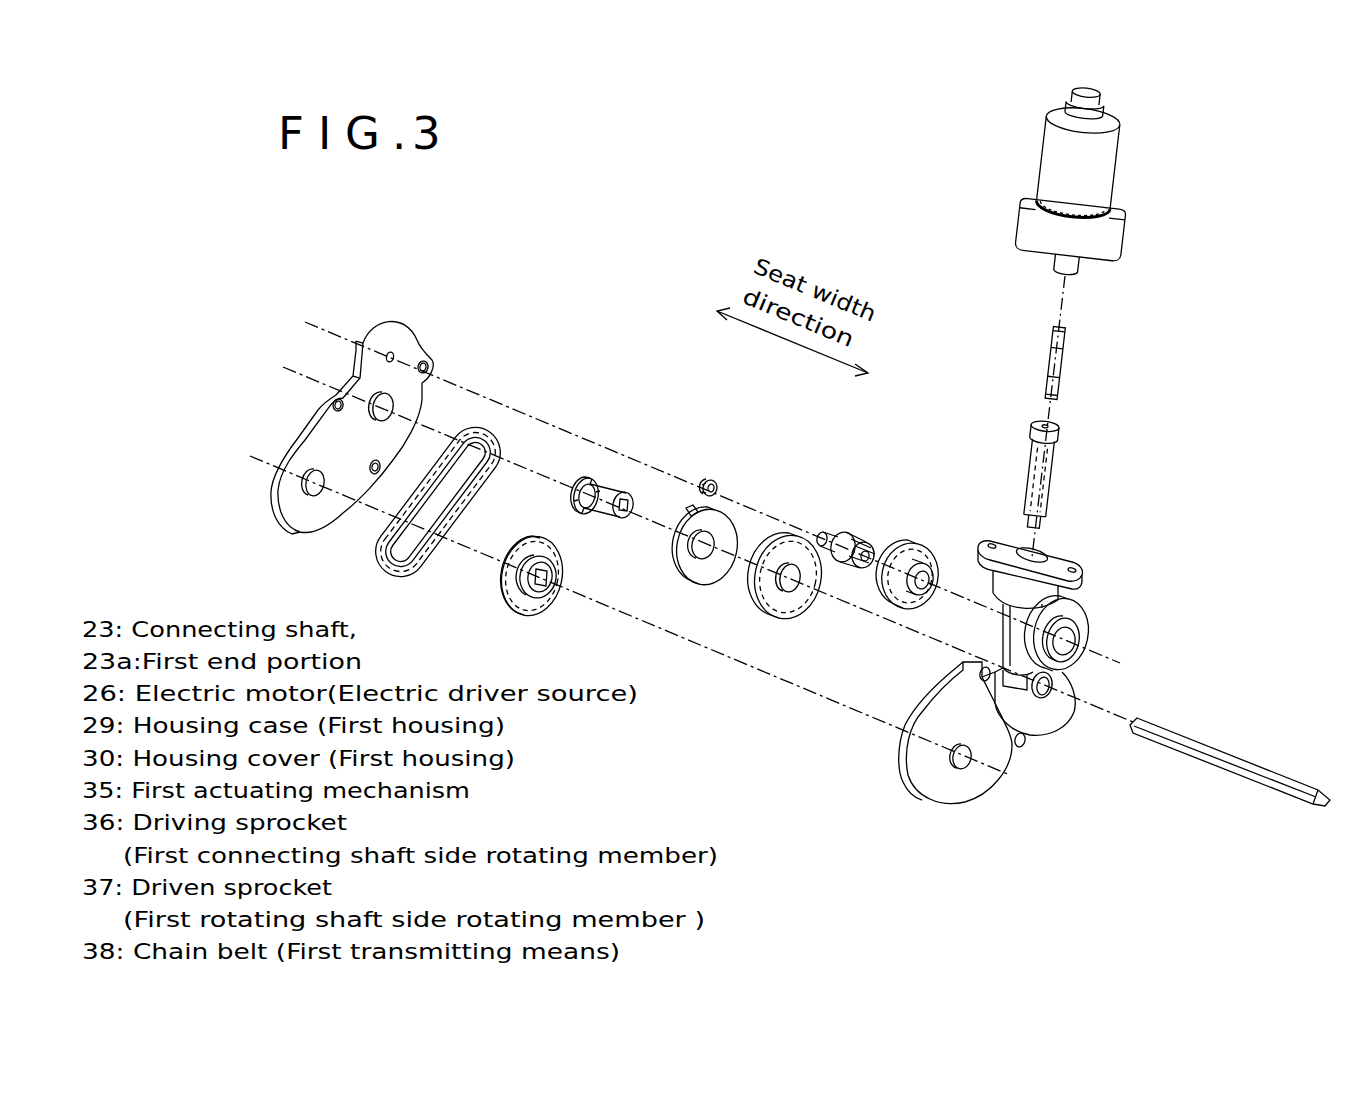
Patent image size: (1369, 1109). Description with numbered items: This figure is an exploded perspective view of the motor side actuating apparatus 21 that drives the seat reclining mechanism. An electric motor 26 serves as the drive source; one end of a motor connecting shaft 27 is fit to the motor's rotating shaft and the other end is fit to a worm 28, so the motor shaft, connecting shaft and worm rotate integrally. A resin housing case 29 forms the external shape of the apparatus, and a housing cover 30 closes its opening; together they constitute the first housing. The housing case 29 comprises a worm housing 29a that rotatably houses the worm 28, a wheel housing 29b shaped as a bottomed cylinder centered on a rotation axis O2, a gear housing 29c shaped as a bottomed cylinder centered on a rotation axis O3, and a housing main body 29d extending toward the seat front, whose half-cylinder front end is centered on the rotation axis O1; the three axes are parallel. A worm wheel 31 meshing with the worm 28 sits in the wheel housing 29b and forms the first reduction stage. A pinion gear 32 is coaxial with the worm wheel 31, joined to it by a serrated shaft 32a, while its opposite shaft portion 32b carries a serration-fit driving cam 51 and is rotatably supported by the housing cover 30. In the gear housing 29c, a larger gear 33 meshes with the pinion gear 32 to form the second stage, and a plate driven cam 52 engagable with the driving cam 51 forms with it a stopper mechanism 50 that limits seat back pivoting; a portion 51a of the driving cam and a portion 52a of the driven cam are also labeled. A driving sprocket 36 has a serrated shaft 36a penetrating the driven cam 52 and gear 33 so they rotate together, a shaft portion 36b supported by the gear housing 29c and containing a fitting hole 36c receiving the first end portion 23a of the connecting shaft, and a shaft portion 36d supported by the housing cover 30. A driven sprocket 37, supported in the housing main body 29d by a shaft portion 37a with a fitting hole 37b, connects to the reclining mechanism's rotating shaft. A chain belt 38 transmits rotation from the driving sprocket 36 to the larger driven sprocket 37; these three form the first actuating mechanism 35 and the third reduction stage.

The rotation axis O1 is at (250, 456).
The rotation axis O2 is at (305, 322).
The rotation axis O3 is at (283, 367).
The motor side actuating apparatus 21 is at (1141, 489).
The first end portion 23a is at (1163, 725).
The electric motor 26 is at (1110, 170).
The motor connecting shaft 27 is at (1060, 362).
The worm 28 is at (1055, 450).
The housing case 29 is at (1030, 672).
The worm housing 29a is at (1015, 616).
The wheel housing 29b is at (1078, 616).
The gear housing 29c is at (1072, 683).
The housing main body 29d is at (1003, 752).
The housing cover 30 is at (318, 430).
The worm wheel 31 is at (912, 550).
The pinion gear 32 is at (858, 518).
The serrated shaft 32a is at (860, 541).
The shaft portion 32b is at (832, 535).
The gear 33 is at (800, 615).
The first actuating mechanism 35 is at (565, 387).
The driving sprocket 36 is at (586, 487).
The serrated shaft 36a is at (598, 484).
The shaft portion 36b is at (604, 518).
The fitting hole 36c is at (627, 513).
The shaft portion 36d is at (571, 493).
The driven sprocket 37 is at (558, 599).
The shaft portion 37a is at (550, 576).
The fitting hole 37b is at (548, 596).
The chain belt 38 is at (478, 432).
The stopper mechanism 50 is at (714, 502).
The driving cam 51 is at (696, 468).
The clip tab 51a is at (703, 489).
The driven cam 52 is at (714, 522).
The washer tab 52a is at (690, 512).